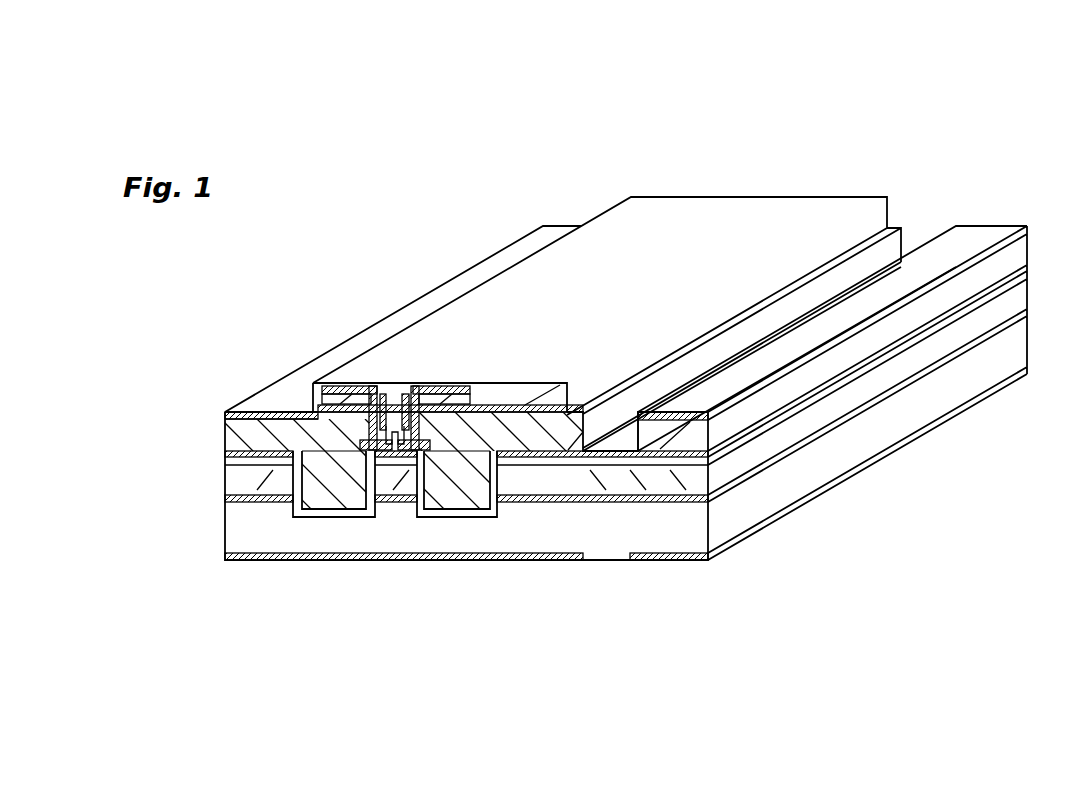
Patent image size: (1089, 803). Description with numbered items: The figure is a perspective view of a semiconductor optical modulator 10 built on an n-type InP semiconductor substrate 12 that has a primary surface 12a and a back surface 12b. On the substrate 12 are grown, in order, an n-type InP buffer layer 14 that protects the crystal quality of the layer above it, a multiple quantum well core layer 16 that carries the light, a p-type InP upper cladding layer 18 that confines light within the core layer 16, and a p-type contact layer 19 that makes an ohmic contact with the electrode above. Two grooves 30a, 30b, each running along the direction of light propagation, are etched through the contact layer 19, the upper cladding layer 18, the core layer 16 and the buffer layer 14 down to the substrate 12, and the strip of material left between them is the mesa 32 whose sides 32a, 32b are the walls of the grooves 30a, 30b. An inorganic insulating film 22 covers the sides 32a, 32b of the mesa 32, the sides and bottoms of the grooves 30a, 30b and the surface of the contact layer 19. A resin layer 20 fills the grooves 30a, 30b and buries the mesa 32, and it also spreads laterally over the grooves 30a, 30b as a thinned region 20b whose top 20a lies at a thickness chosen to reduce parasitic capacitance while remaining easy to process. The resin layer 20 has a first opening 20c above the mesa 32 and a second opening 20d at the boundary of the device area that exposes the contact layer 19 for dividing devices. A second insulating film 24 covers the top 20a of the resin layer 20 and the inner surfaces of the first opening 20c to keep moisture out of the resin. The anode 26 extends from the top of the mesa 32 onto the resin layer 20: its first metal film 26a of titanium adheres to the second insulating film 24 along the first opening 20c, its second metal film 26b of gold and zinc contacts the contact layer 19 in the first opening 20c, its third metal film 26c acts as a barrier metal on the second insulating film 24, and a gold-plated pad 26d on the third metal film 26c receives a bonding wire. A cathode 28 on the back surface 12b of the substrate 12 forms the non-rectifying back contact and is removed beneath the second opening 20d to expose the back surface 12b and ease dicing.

The semiconductor optical modulator 10 is at (976, 134).
The semiconductor substrate 12 is at (232, 523).
The primary surface 12a is at (232, 497).
The back surface 12b is at (234, 557).
The buffer layer 14 is at (627, 502).
The core layer 16 is at (607, 490).
The upper cladding layer 18 is at (232, 479).
The contact layer 19 is at (232, 455).
The resin layer 20 is at (323, 518).
The top of the resin layer 20a is at (232, 410).
The thinned region 20b is at (232, 436).
The first opening 20c is at (398, 420).
The second opening 20d is at (630, 437).
The insulating film 22 is at (345, 518).
The second insulating film 24 is at (223, 414).
The anode 26 is at (756, 194).
The first metal film 26a is at (425, 392).
The second metal film 26b is at (437, 392).
The third metal film 26c is at (550, 404).
The pad 26d is at (647, 257).
The cathode 28 is at (247, 565).
The groove 30a is at (302, 518).
The groove 30b is at (493, 518).
The mesa 32 is at (387, 518).
The side of the mesa 32a is at (363, 518).
The side of the mesa 32b is at (425, 518).